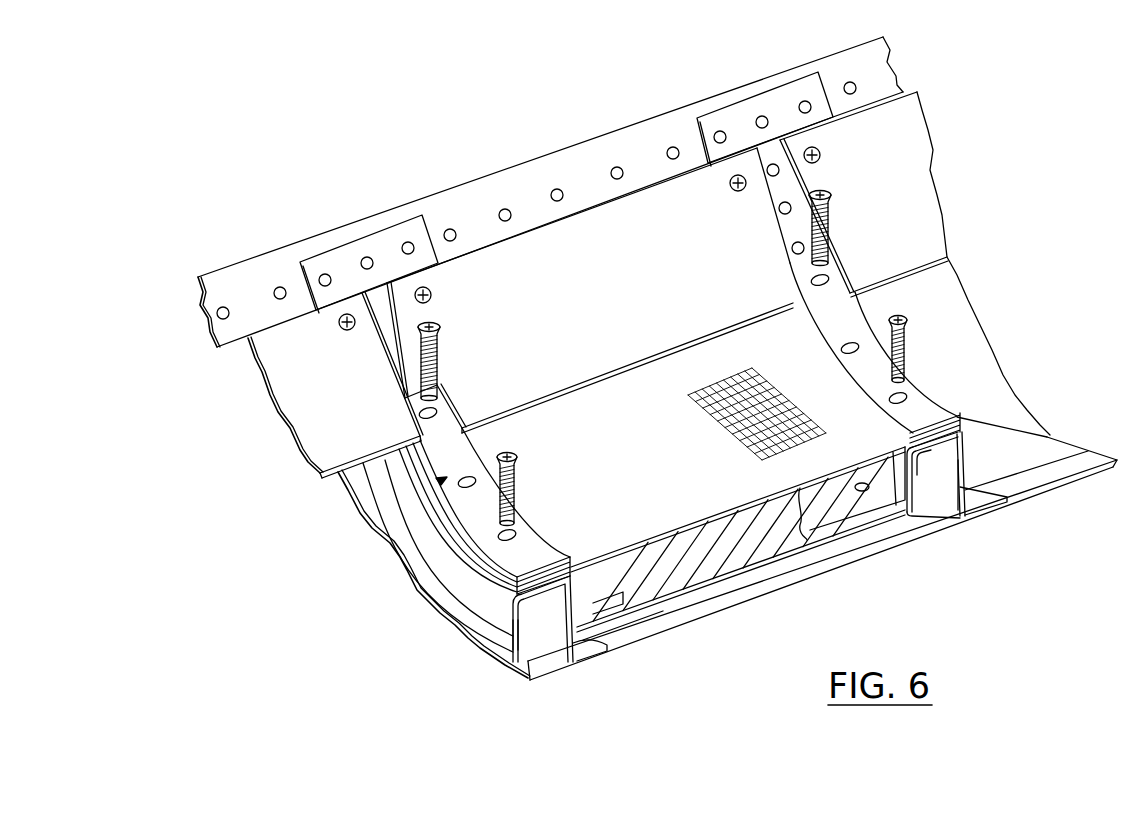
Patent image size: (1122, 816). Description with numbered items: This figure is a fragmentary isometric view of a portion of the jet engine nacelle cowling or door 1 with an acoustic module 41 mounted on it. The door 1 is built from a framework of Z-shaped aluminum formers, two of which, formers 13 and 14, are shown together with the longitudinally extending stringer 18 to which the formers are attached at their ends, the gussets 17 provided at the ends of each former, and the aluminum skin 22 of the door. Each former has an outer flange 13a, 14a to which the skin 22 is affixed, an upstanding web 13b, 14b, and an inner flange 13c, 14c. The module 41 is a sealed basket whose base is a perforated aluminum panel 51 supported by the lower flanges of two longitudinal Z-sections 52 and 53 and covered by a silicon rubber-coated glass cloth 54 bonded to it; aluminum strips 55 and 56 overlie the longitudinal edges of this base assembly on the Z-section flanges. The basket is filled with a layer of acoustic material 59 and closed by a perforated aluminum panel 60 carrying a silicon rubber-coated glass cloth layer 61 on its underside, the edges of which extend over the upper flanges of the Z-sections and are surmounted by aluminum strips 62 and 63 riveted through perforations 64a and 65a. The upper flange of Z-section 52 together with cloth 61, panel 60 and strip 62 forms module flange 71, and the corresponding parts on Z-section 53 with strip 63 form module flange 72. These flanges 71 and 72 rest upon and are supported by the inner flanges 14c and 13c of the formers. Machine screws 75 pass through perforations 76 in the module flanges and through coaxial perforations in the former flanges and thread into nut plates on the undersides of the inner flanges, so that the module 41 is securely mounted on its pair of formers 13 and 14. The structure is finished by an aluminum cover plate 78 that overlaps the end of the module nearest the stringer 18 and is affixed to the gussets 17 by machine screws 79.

The nacelle door 1 is at (940, 303).
The former 13 is at (547, 647).
The outer flange 13a is at (582, 652).
The upstanding web 13b is at (533, 637).
The inner flange 13c is at (497, 625).
The former 14 is at (957, 487).
The outer flange 14a is at (980, 500).
The upstanding web 14b is at (950, 502).
The inner flange 14c is at (928, 452).
The gusset 17 is at (357, 250).
The stringer 18 is at (533, 173).
The skin 22 is at (1050, 438).
The module 41 is at (637, 393).
The perforated aluminum panel 51 is at (727, 577).
The Z-section 52 is at (893, 473).
The Z-section 53 is at (590, 605).
The silicon rubber-coated glass cloth 54 is at (707, 573).
The aluminum strip 55 is at (860, 500).
The aluminum strip 56 is at (603, 607).
The acoustic material 59 is at (663, 580).
The perforated aluminum panel 60 is at (641, 457).
The silicon rubber-coated glass cloth layer 61 is at (800, 490).
The aluminum strip 62 is at (960, 410).
The aluminum strip 63 is at (520, 560).
The perforation 64a is at (845, 348).
The perforation 65a is at (470, 480).
The module flange 71 is at (860, 332).
The module flange 72 is at (447, 477).
The machine screw 75 is at (438, 343).
The perforation 76 is at (437, 408).
The cover plate 78 is at (556, 277).
The machine screw 79 is at (433, 292).